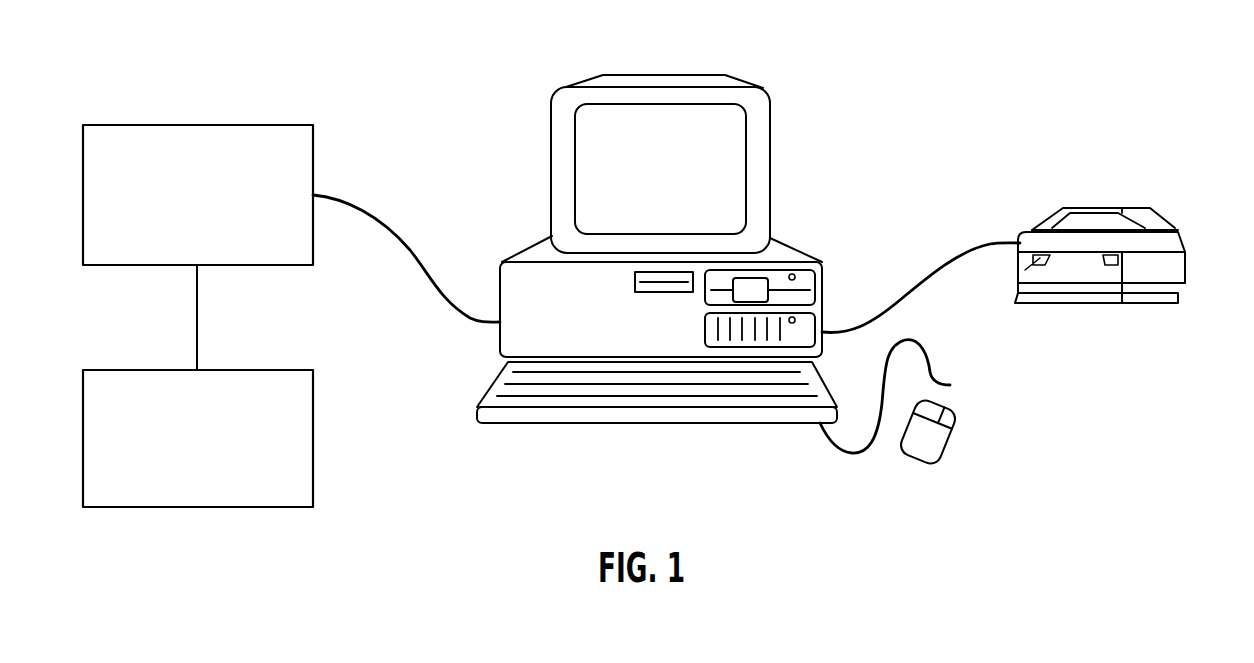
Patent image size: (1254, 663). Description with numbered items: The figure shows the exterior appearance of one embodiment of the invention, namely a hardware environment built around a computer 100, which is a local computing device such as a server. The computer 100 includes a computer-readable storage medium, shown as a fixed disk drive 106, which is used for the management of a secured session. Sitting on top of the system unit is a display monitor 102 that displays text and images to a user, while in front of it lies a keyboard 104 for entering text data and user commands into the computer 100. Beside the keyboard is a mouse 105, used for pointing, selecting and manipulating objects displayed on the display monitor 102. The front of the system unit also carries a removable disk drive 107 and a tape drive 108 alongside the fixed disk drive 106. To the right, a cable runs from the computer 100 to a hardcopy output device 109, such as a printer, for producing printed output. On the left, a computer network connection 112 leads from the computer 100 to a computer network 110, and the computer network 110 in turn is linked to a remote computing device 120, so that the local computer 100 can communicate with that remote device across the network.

The computer 100 is at (682, 252).
The display monitor 102 is at (563, 131).
The keyboard 104 is at (537, 417).
The mouse 105 is at (937, 455).
The fixed disk drive 106 is at (740, 342).
The removable disk drive 107 is at (808, 298).
The tape drive 108 is at (688, 273).
The hardcopy output device 109 is at (1187, 267).
The computer network 110 is at (258, 125).
The computer network connection 112 is at (397, 230).
The remote computing device 120 is at (262, 370).